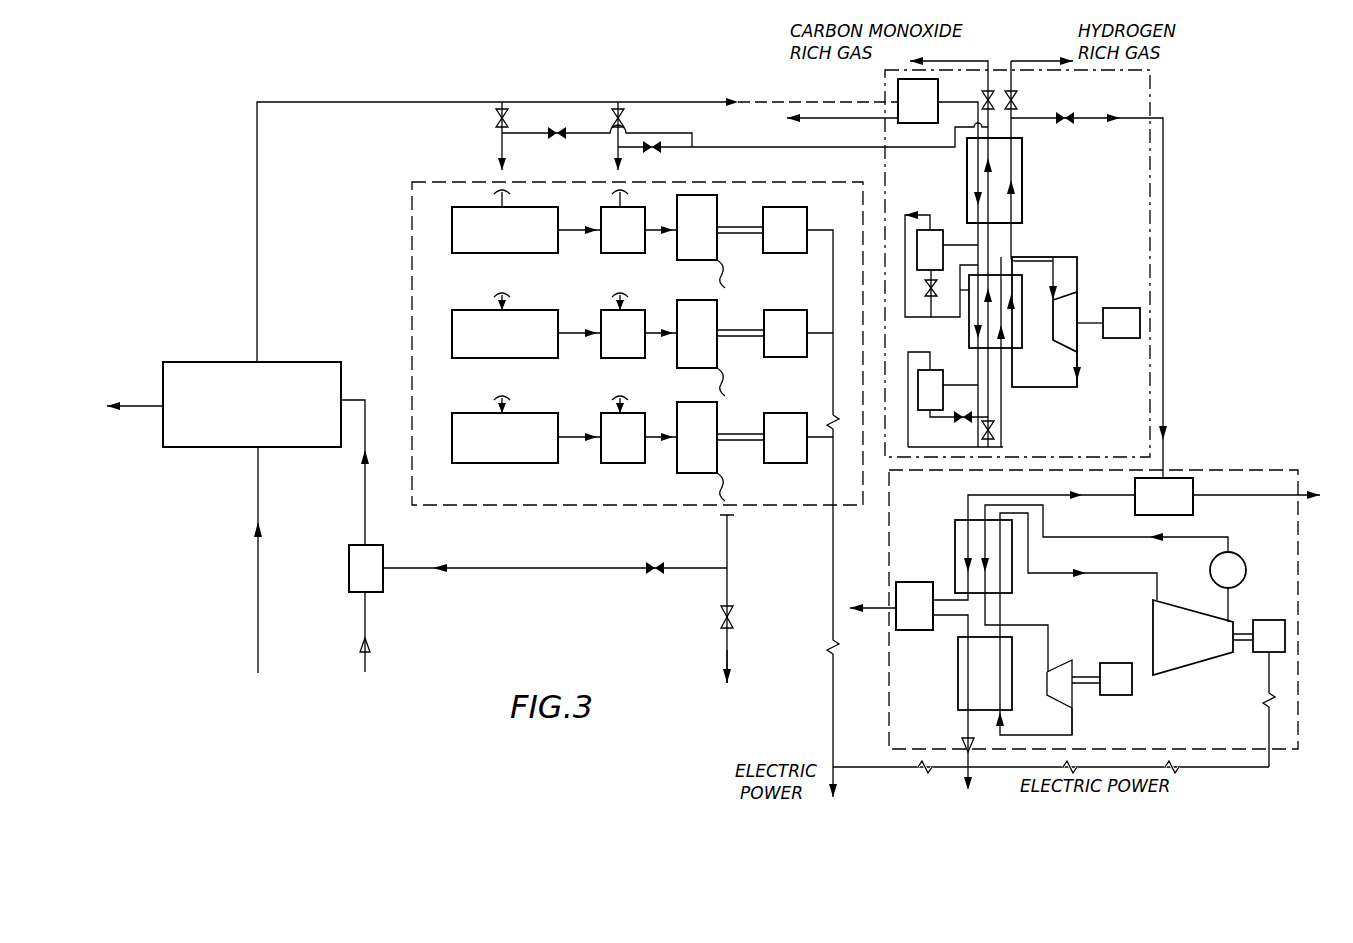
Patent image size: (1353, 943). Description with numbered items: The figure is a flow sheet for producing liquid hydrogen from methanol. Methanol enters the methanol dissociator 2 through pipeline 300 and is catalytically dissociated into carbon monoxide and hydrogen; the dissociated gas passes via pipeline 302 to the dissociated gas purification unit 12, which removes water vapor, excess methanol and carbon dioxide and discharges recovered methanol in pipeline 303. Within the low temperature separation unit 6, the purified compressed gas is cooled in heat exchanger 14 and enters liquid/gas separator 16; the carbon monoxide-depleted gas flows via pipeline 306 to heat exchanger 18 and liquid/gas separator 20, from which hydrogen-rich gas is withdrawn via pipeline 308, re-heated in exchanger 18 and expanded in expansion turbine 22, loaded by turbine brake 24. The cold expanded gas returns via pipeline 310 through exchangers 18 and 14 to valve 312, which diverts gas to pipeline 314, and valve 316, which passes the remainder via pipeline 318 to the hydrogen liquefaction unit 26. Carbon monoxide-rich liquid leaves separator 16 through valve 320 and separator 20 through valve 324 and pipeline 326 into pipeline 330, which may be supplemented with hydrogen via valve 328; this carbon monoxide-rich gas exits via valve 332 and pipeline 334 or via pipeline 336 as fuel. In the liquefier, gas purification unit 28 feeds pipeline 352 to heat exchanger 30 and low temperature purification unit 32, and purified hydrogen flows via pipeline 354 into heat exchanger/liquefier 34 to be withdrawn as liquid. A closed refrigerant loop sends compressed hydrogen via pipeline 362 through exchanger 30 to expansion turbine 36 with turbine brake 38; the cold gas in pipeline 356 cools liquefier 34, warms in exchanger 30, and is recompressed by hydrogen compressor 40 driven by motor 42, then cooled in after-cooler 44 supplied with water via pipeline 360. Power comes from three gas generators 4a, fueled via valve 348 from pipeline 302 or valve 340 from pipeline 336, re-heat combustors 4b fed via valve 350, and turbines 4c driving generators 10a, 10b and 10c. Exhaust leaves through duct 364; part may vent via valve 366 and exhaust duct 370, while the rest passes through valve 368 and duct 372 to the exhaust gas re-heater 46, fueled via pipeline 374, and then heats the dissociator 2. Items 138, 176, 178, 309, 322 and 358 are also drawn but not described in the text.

The methanol dissociator 2 is at (256, 417).
The gas turbine high pressure gas generators 4a is at (505, 326).
The exhaust gas re-heat combustors 4b is at (623, 326).
The turbines 4c is at (701, 348).
The electricity generator 10a is at (786, 230).
The electricity generator 10b is at (787, 333).
The electricity generator 10c is at (786, 438).
The low temperature hydrogen/carbon monoxide separation unit 6 is at (1163, 226).
The dissociated gas purification unit 12 is at (918, 101).
The heat exchanger 14 is at (1022, 205).
The liquid/gas separator 16 is at (940, 230).
The heat exchanger 18 is at (1022, 297).
The liquid/gas separator 20 is at (948, 390).
The expansion turbine 22 is at (1063, 294).
The turbine brake 24 is at (1115, 308).
The hydrogen liquefaction unit 26 is at (1222, 468).
The gas purification unit 28 is at (1227, 492).
The heat exchanger 30 is at (1012, 585).
The low temperature gas purification unit 32 is at (891, 606).
The heat exchanger/liquefier 34 is at (958, 690).
The expansion turbine 36 is at (1058, 668).
The turbine brake 38 is at (1112, 668).
The hydrogen compressor 40 is at (1198, 650).
The driving motor 42 is at (1282, 648).
The after-cooler 44 is at (1211, 566).
The exhaust gas re-heater 46 is at (381, 546).
The valve 138 is at (659, 156).
The line 176 is at (368, 457).
The exhaust line 178 is at (119, 401).
The pipeline 300 is at (258, 568).
The pipeline 302 is at (257, 268).
The pipeline 303 is at (823, 125).
The pipeline 306 is at (938, 250).
The pipeline 308 is at (955, 393).
The line 309 is at (1040, 245).
The pipeline 310 is at (1044, 332).
The valve 312 is at (1017, 96).
The pipeline 314 is at (1040, 172).
The valve 316 is at (1069, 131).
The pipeline 318 is at (1087, 278).
The valve 320 is at (946, 290).
The valve 322 is at (932, 295).
The valve 324 is at (959, 428).
The pipeline 326 is at (991, 416).
The valve 328 is at (996, 434).
The pipeline 330 is at (988, 390).
The valve 332 is at (982, 94).
The pipeline 334 is at (951, 241).
The pipeline 336 is at (803, 145).
The valve 340 is at (597, 124).
The valve 348 is at (482, 136).
The valve 350 is at (641, 136).
The pipeline 352 is at (1034, 535).
The pipeline 354 is at (942, 719).
The pipeline 356 is at (1076, 624).
The line 358 is at (1253, 604).
The pipeline 360 is at (1247, 555).
The pipeline 362 is at (1104, 588).
The duct 364 is at (747, 599).
The valve 366 is at (751, 617).
The valve 368 is at (653, 555).
The exhaust duct 370 is at (737, 682).
The duct 372 is at (511, 564).
The pipeline 374 is at (390, 632).